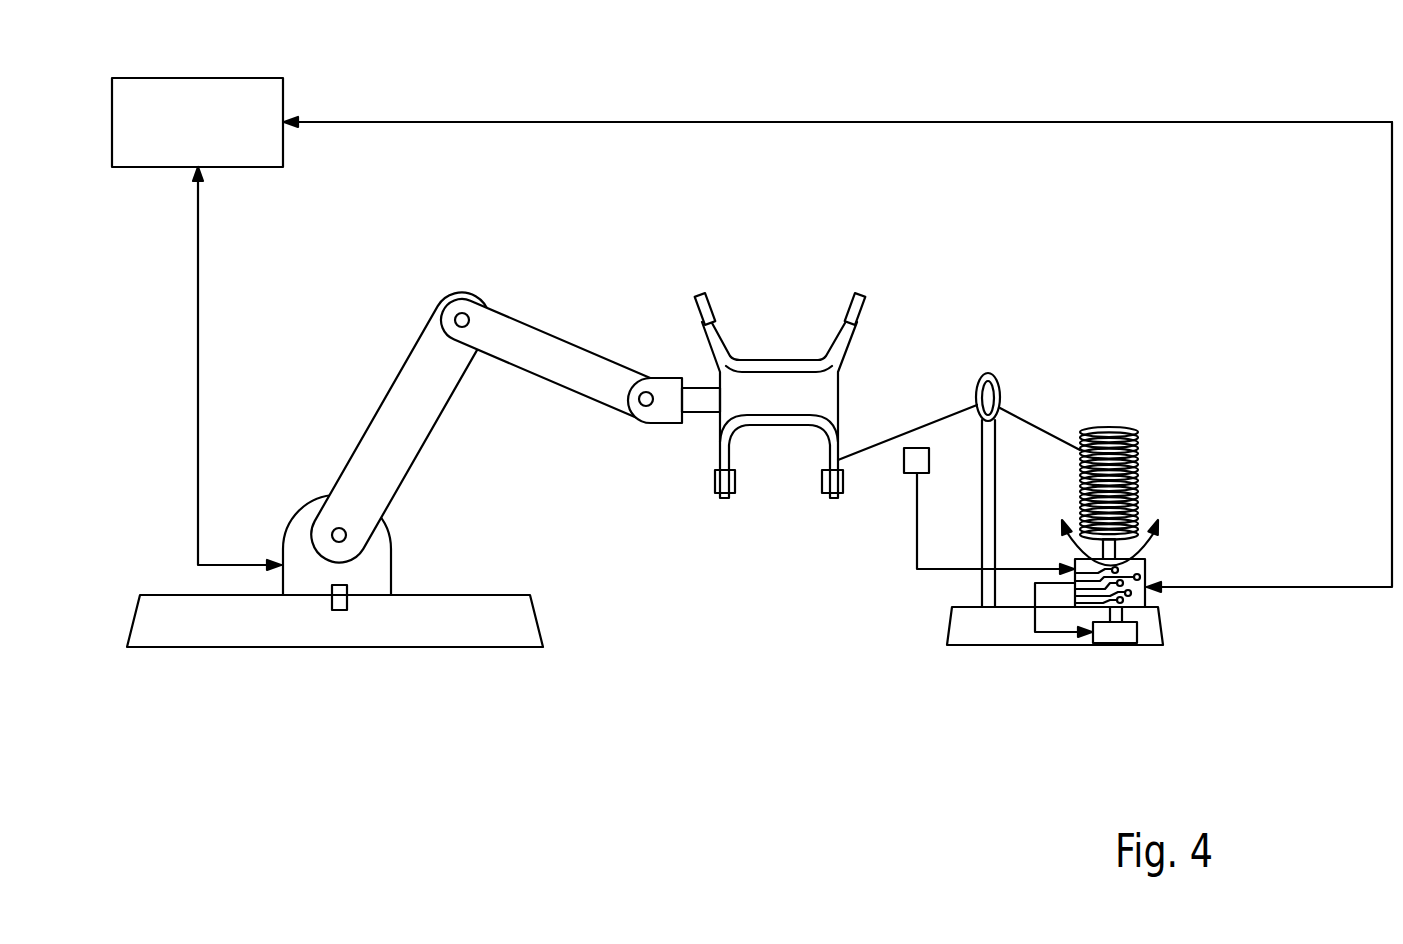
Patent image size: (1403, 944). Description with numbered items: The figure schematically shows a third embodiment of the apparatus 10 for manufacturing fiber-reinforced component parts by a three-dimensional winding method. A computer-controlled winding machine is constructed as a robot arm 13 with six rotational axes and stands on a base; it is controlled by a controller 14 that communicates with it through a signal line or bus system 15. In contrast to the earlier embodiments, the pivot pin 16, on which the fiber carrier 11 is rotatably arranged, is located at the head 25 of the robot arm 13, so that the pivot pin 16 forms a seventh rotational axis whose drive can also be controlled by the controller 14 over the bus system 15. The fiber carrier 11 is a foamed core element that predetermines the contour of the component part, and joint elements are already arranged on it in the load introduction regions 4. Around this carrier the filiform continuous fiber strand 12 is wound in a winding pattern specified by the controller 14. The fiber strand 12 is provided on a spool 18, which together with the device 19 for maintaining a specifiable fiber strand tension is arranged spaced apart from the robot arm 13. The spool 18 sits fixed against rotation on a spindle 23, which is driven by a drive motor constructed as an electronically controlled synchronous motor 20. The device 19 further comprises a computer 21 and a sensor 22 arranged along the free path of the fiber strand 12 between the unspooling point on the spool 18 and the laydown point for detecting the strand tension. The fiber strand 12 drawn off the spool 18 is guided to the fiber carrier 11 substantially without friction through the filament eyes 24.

The load introduction regions 4 is at (706, 296).
The apparatus 10 is at (758, 655).
The fiber carrier 11 is at (820, 395).
The fiber strand 12 is at (777, 370).
The robot arm 13 is at (414, 480).
The controller 14 is at (185, 110).
The bus system 15 is at (422, 122).
The pivot pin 16 is at (700, 400).
The spool 18 is at (1110, 432).
The device for maintaining fiber strand tension 19 is at (1065, 270).
The synchronous motor 20 is at (1118, 643).
The computer 21 is at (1147, 573).
The sensor 22 is at (918, 462).
The spindle 23 is at (1137, 552).
The filament eyes 24 is at (990, 373).
The head 25 is at (672, 415).